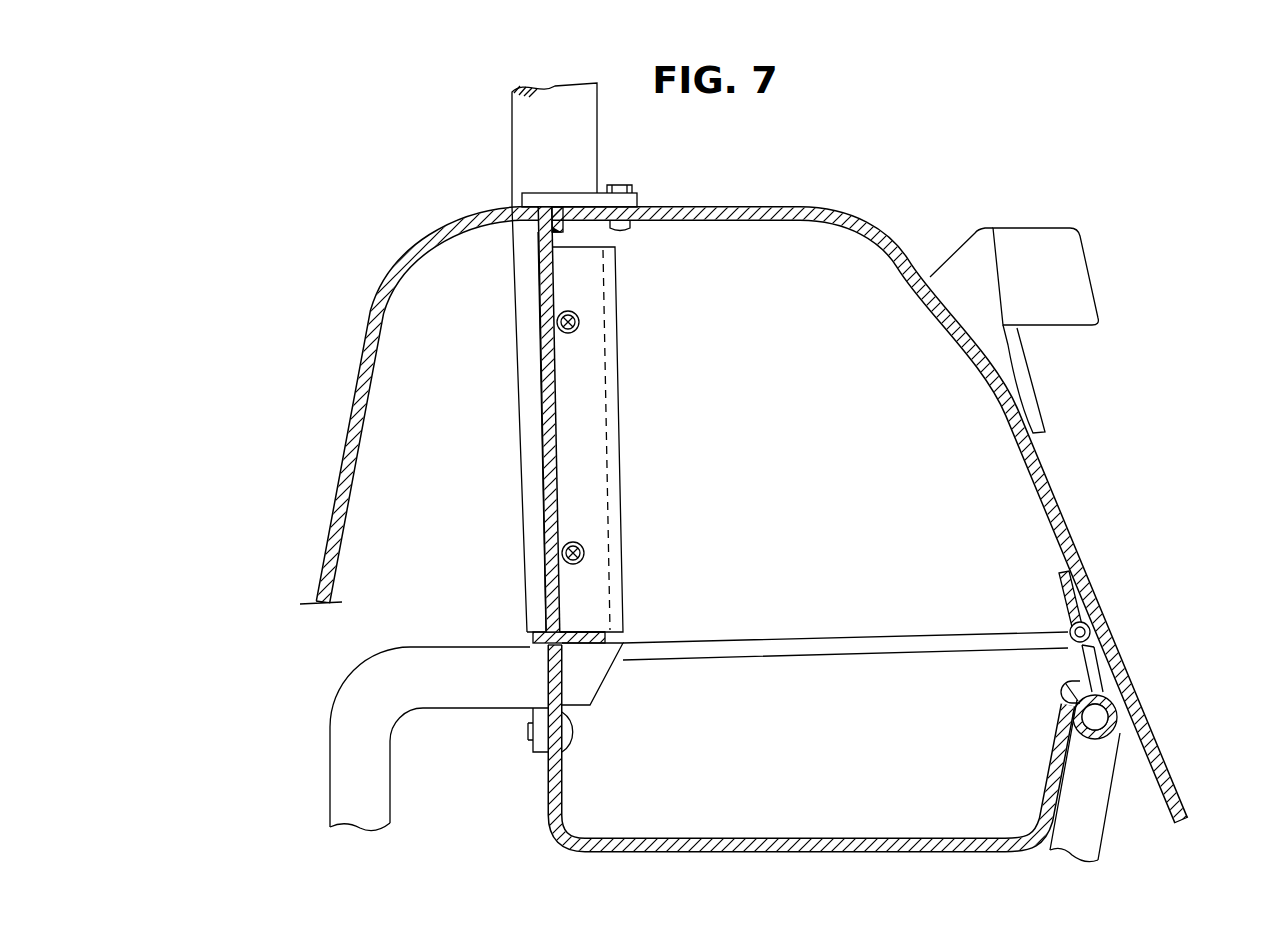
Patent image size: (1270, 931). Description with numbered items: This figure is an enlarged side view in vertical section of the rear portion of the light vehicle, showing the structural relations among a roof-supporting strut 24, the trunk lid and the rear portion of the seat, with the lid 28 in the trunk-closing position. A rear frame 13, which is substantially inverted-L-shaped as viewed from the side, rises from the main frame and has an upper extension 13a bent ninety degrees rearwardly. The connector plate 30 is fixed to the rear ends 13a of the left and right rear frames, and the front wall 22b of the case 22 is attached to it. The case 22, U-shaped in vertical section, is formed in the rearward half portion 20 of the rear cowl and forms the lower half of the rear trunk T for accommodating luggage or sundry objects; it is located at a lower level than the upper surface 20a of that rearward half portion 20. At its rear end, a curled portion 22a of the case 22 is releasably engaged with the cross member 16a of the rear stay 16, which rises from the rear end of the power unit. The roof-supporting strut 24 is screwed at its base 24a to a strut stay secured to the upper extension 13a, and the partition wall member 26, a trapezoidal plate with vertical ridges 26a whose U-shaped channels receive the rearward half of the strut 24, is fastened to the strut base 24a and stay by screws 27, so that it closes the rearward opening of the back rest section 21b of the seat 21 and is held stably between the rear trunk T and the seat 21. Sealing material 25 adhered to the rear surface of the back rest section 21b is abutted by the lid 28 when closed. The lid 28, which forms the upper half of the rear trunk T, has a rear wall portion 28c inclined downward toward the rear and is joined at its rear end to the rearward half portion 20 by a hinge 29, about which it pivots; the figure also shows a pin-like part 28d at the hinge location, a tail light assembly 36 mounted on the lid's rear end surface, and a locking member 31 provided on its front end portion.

The rear frame 13 is at (343, 761).
The upper extension 13a is at (443, 655).
The rear stay 16 is at (1092, 810).
The cross member 16a is at (1098, 717).
The rearward half portion of the rear cowl 20 is at (1160, 765).
The upper surface of the rear flange portion 20a is at (798, 640).
The seat 21 is at (385, 270).
The back rest section 21b is at (362, 362).
The case 22 is at (798, 838).
The curled portion 22a is at (1060, 695).
The front wall 22b is at (562, 780).
The roof-supporting strut 24 is at (528, 128).
The strut base 24a is at (517, 342).
The sealing material 25 is at (567, 228).
The partition wall member 26 is at (545, 441).
The vertical ridge 26a is at (617, 420).
The screw 27 is at (582, 323).
The lid 28 is at (868, 228).
The rear wall portion 28c is at (790, 207).
The pivot pin 28d is at (1088, 613).
The hinge 29 is at (1060, 593).
The connector plate 30 is at (580, 628).
The locking member 31 is at (537, 194).
The tail light assembly 36 is at (1072, 262).
The rear trunk T is at (863, 323).